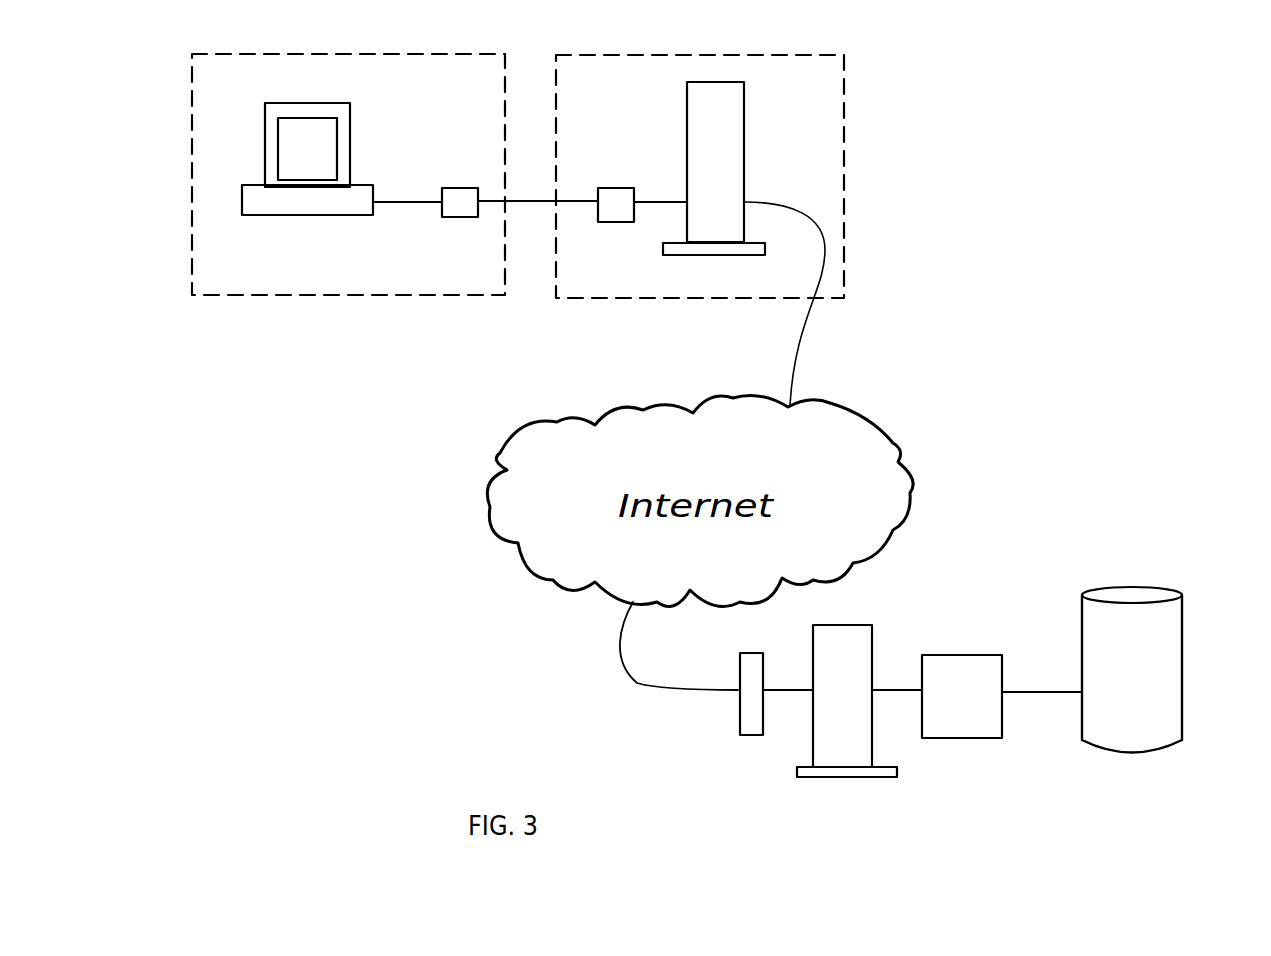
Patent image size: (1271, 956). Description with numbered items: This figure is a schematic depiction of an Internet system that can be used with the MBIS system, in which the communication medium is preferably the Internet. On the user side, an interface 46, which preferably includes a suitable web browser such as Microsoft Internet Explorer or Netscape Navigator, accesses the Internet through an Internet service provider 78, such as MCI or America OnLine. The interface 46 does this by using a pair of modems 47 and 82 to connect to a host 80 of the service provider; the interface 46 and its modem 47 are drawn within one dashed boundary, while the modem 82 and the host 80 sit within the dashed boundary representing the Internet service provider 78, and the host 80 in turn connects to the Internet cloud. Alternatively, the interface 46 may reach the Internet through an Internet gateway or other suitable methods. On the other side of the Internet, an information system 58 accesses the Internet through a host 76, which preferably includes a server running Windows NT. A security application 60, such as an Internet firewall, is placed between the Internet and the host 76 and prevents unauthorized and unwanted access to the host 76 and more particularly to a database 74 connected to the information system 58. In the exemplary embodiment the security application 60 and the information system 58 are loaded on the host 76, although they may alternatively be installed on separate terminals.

The interface 46 is at (240, 212).
The modem 47 is at (460, 222).
The information system 58 is at (958, 654).
The security application 60 is at (738, 735).
The database 74 is at (1183, 622).
The host 76 is at (866, 627).
The Internet service provider 78 is at (844, 55).
The host 80 is at (744, 158).
The modem 82 is at (614, 188).